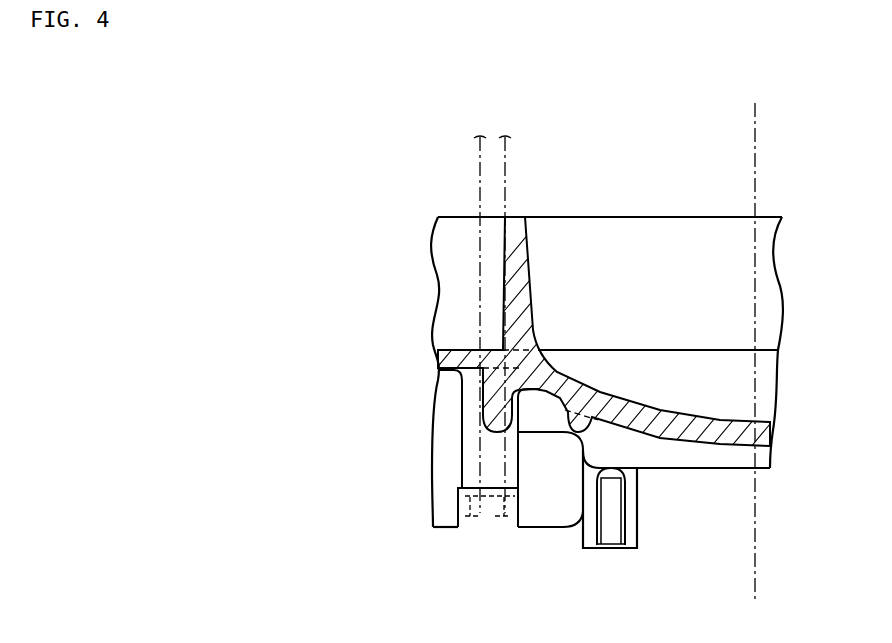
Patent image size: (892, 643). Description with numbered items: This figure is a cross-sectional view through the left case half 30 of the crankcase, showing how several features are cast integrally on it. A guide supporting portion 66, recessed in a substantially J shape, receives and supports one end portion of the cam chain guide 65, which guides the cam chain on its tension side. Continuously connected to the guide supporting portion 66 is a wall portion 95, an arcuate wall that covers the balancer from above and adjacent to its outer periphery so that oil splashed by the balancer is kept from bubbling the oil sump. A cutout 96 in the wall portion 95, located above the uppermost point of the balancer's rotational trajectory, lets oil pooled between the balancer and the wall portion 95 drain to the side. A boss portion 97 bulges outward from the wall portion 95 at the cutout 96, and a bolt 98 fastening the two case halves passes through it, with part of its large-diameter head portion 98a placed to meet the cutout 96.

The left case half 30 is at (774, 433).
The cam chain guide 65 is at (613, 547).
The guide supporting portion 66 is at (638, 518).
The wall portion 95 is at (543, 517).
The cutout 96 is at (462, 528).
The boss portion 97 is at (462, 441).
The bolt 98 is at (478, 303).
The large-diameter head portion 98a is at (492, 517).